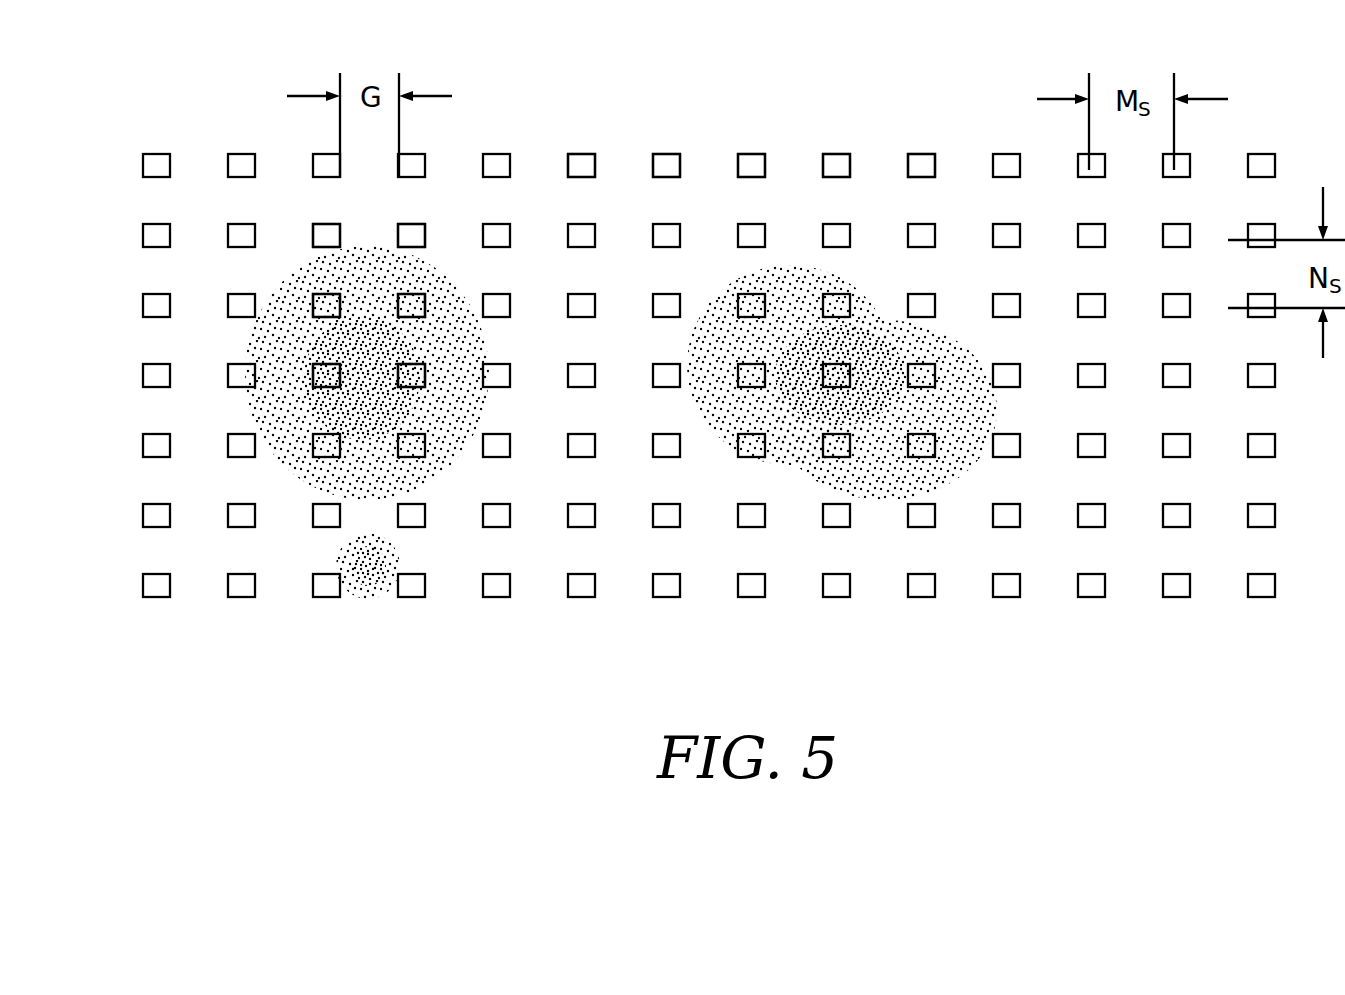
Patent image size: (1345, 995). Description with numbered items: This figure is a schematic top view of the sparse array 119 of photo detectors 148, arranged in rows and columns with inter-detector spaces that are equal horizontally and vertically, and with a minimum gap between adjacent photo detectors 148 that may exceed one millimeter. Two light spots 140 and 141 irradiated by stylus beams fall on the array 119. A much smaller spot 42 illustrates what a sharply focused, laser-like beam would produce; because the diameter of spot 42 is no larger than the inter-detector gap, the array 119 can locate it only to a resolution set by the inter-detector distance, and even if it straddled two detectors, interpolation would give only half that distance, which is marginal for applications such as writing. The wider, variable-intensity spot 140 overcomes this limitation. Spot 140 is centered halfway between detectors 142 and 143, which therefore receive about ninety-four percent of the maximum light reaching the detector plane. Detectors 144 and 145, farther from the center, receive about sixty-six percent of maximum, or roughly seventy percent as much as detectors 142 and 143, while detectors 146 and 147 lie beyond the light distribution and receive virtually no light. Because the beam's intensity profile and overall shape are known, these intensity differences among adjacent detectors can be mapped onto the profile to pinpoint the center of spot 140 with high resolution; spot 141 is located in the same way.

The array 119 is at (654, 375).
The photo detectors 148 is at (920, 162).
The light spot 140 is at (410, 408).
The light spot 141 is at (880, 427).
The spot 42 is at (365, 597).
The detector 142 is at (313, 375).
The detector 143 is at (425, 375).
The detector 144 is at (313, 305).
The detector 145 is at (425, 305).
The detector 146 is at (313, 238).
The detector 147 is at (425, 240).